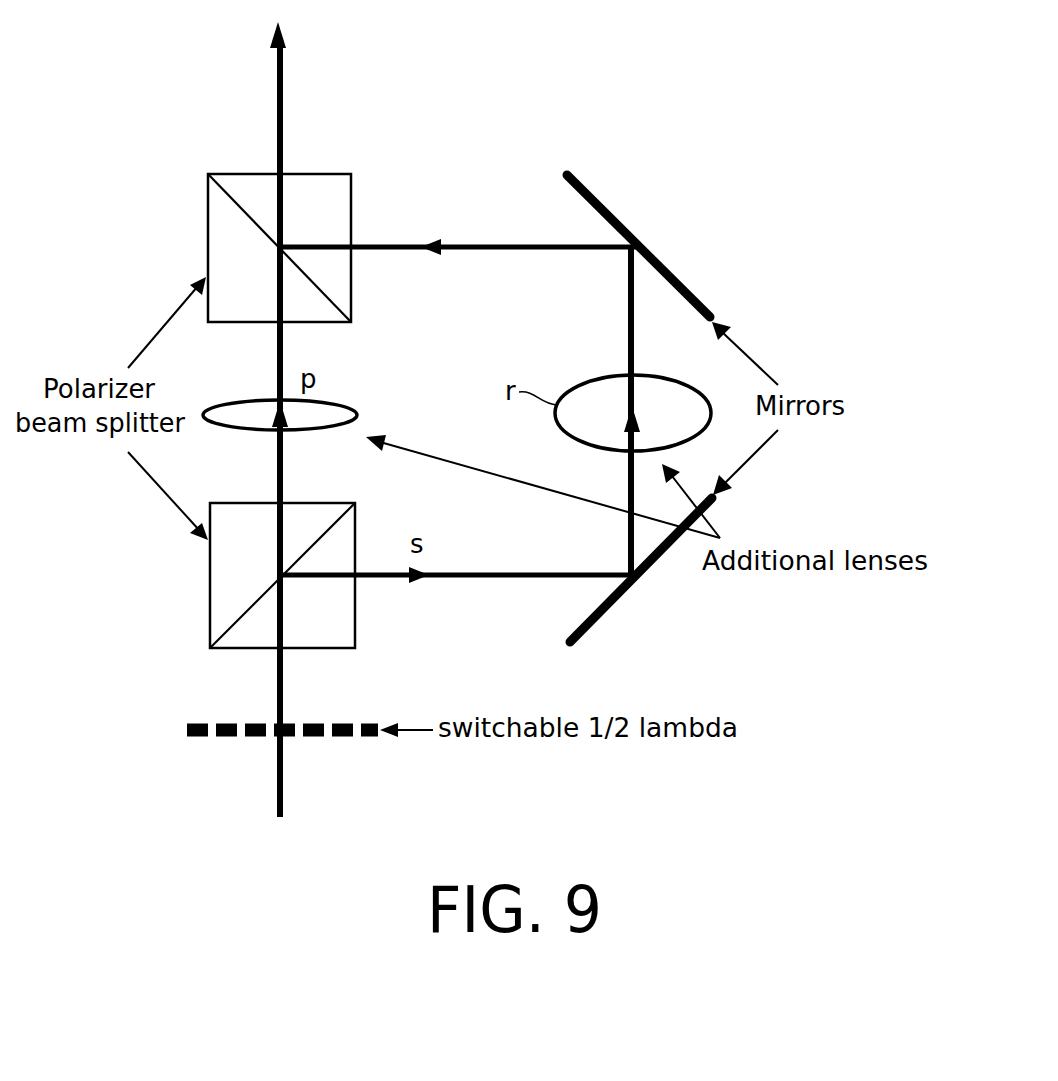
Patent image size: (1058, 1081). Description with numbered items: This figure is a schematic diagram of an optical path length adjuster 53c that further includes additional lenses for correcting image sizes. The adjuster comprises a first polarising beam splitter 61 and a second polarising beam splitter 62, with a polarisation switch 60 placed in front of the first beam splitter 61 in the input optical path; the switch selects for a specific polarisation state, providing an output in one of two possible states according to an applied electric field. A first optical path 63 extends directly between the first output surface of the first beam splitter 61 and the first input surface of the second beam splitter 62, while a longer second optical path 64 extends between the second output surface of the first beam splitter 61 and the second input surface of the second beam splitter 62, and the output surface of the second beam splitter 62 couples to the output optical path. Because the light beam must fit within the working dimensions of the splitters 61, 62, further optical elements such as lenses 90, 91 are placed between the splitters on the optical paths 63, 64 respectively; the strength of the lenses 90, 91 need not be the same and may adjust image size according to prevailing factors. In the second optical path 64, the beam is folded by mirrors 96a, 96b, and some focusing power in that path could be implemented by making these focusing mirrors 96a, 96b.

The optical path length adjuster 53c is at (682, 113).
The polarisation switch 60 is at (185, 731).
The first polarising beam splitter 61 is at (209, 577).
The second polarising beam splitter 62 is at (207, 213).
The first optical path 63 is at (283, 357).
The second optical path 64 is at (629, 343).
The lens 90 is at (358, 415).
The lens 91 is at (642, 375).
The focusing mirror 96a is at (641, 577).
The focusing mirror 96b is at (667, 266).